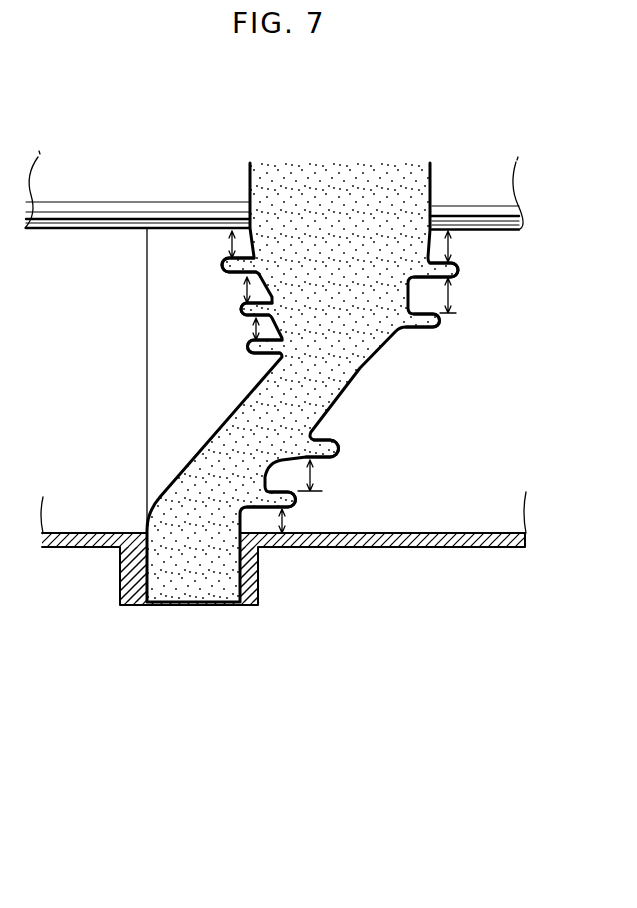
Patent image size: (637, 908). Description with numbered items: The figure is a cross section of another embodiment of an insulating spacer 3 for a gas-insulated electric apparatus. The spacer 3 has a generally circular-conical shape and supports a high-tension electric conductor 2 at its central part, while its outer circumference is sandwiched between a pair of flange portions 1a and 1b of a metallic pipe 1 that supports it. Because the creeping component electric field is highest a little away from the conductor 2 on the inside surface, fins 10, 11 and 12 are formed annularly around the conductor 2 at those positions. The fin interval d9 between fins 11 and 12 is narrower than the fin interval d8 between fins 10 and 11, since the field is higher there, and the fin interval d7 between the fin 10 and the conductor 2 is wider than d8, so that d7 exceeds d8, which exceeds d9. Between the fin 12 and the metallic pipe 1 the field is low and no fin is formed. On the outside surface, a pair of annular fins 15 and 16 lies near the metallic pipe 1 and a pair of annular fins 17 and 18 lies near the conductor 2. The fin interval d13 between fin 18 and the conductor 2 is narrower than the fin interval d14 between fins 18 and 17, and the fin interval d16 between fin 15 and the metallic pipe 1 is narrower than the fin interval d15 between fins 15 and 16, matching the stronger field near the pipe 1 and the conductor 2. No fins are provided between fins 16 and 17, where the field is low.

The metallic pipe 1 is at (76, 549).
The flange portion 1a is at (120, 585).
The flange portion 1b is at (258, 590).
The high-tension electric conductor 2 is at (52, 231).
The insulating spacer 3 is at (364, 386).
The fin 10 is at (222, 266).
The fin 11 is at (240, 308).
The fin 12 is at (247, 349).
The annular fin 15 is at (297, 500).
The annular fin 16 is at (338, 447).
The annular fin 17 is at (442, 321).
The annular fin 18 is at (460, 268).
The fin interval d7 is at (232, 243).
The fin interval d8 is at (247, 290).
The fin interval d9 is at (256, 330).
The fin interval d13 is at (450, 247).
The fin interval d14 is at (450, 294).
The fin interval d15 is at (314, 472).
The fin interval d16 is at (287, 518).